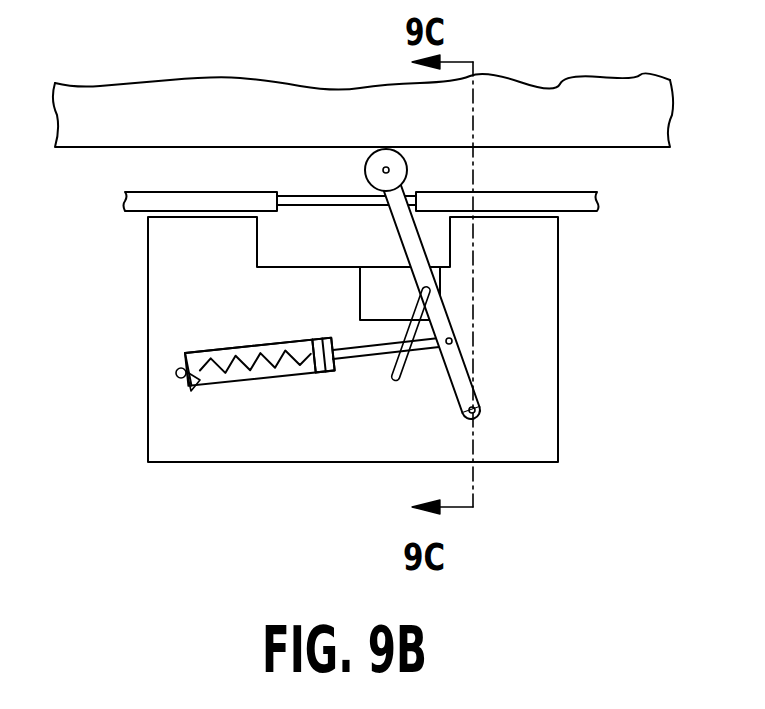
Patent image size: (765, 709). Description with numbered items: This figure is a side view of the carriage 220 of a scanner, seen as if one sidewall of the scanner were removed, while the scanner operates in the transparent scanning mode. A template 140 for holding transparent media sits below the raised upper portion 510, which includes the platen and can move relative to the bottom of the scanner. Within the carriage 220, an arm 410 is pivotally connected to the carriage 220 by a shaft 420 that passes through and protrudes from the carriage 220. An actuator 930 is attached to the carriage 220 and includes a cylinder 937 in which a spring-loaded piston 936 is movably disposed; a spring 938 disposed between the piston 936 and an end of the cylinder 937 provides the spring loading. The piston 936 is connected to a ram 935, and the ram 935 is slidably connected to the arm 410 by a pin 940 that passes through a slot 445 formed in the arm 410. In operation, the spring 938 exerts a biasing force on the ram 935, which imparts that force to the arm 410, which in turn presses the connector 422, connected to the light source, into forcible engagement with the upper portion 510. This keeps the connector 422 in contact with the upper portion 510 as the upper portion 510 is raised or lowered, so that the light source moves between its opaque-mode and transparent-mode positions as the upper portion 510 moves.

The upper portion 510 is at (648, 115).
The template 140 is at (597, 203).
The connector 422 is at (365, 167).
The arm 410 is at (415, 248).
The carriage 220 is at (220, 449).
The cylinder 937 is at (190, 352).
The actuator 930 is at (188, 388).
The spring 938 is at (190, 385).
The piston 936 is at (322, 376).
The ram 935 is at (358, 360).
The pin 940 is at (452, 340).
The slot 445 is at (466, 372).
The shaft 420 is at (474, 416).